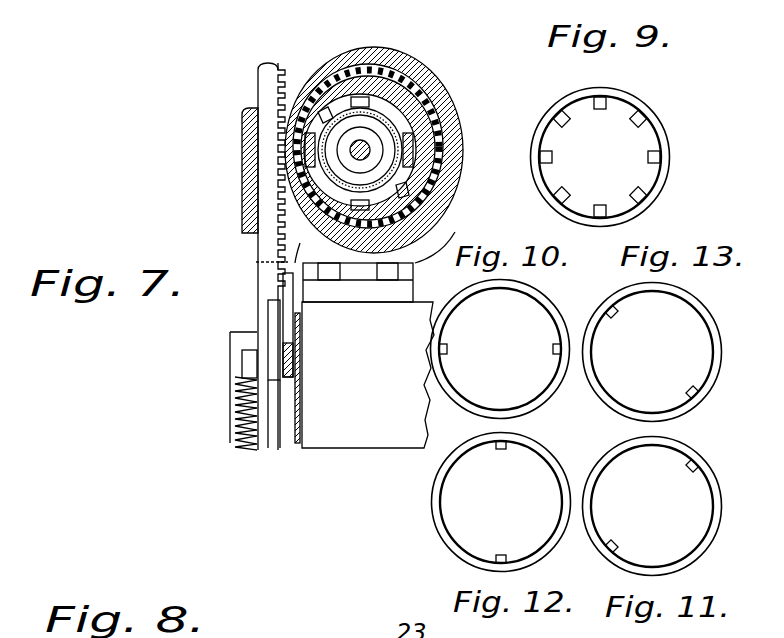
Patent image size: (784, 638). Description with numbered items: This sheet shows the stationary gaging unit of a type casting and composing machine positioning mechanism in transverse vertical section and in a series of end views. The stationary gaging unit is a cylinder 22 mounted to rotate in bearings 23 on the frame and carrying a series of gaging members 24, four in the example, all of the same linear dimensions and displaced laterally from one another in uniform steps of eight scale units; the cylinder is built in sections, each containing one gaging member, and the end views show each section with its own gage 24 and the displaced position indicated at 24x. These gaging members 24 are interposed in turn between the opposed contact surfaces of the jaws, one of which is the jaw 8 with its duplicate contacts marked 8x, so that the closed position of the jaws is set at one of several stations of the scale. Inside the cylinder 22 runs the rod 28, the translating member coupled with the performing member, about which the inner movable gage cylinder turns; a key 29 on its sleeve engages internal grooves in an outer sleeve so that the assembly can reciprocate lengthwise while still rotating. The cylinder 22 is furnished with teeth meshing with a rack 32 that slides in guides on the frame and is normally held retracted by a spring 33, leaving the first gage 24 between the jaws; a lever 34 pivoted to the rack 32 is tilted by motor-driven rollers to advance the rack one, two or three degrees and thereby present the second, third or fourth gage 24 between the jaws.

In FIG. 7, the jaw 8 is at (413, 151).
In FIG. 7, the lug 8x is at (305, 152).
In FIG. 7, the cylinder 22 is at (427, 80).
In FIG. 7, the bearings 23 is at (436, 112).
In FIG. 7, the gaging members 24 is at (326, 109).
In FIG. 9, the gaging members 24 is at (570, 126).
In FIG. 10, the gaging members 24 is at (553, 353).
In FIG. 13, the gaging members 24 is at (616, 318).
In FIG. 12, the gaging members 24 is at (501, 450).
In FIG. 11, the gaging members 24 is at (689, 471).
In FIG. 7, the lug 24x is at (402, 190).
In FIG. 9, the lug 24x is at (552, 161).
In FIG. 10, the lug 24x is at (449, 348).
In FIG. 13, the lug 24x is at (689, 392).
In FIG. 12, the lug 24x is at (502, 554).
In FIG. 11, the lug 24x is at (616, 545).
In FIG. 7, the rod 28 is at (362, 148).
In FIG. 7, the key 29 is at (403, 146).
In FIG. 7, the rack 32 is at (268, 86).
In FIG. 7, the spring 33 is at (234, 410).
In FIG. 7, the lever 34 is at (293, 353).